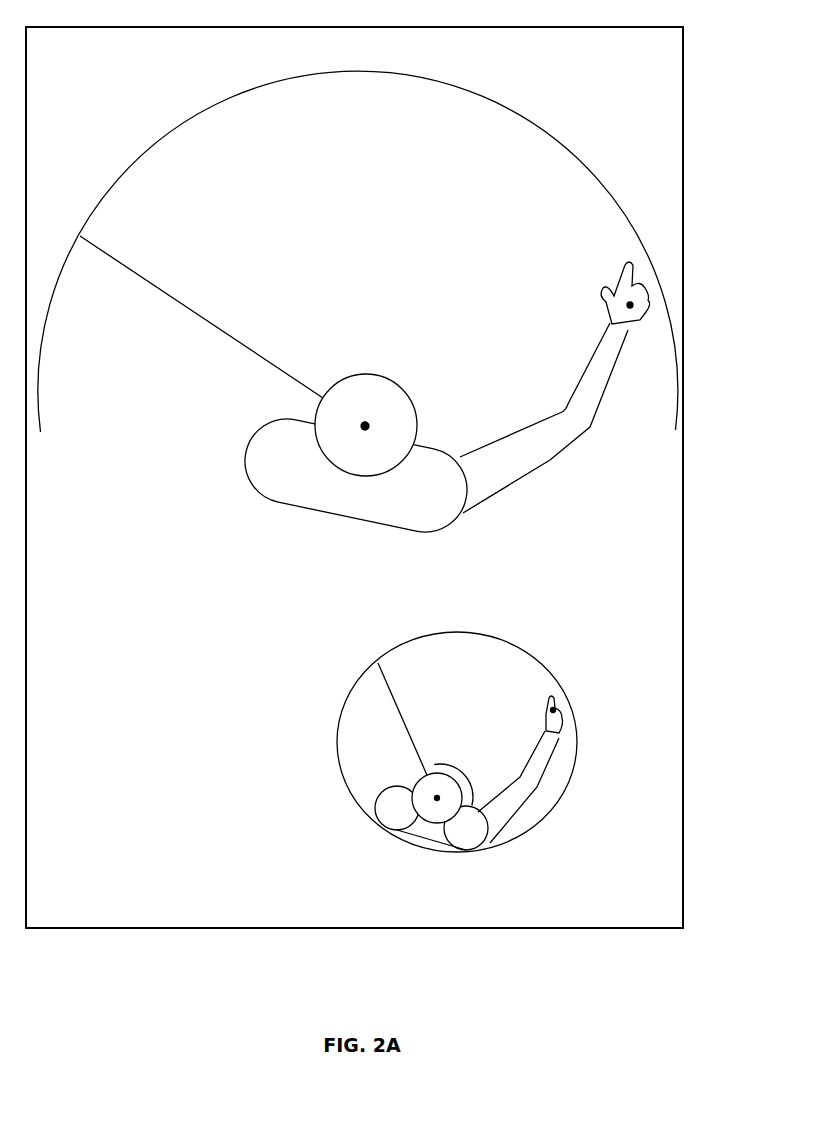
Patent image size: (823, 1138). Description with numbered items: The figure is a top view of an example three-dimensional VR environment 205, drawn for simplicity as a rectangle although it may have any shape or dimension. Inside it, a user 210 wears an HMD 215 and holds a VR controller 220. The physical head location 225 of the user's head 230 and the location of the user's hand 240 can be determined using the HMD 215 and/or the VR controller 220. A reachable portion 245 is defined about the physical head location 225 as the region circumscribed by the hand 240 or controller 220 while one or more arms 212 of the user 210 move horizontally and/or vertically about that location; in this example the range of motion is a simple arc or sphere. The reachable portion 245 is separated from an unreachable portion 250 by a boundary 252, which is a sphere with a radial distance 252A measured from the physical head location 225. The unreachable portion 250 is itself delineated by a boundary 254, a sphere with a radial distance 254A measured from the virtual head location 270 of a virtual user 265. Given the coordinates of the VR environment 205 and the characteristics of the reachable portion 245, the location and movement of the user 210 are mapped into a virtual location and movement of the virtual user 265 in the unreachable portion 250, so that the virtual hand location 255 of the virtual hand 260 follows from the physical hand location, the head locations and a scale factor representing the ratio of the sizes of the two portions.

The three-dimensional VR environment 205 is at (683, 822).
The unreachable portion 250 is at (372, 149).
The boundary 254 is at (563, 147).
The radial distance 254A is at (185, 304).
The virtual user 265 is at (358, 496).
The virtual hand 260 is at (648, 317).
The virtual hand location 255 is at (652, 294).
The virtual head location 270 is at (360, 415).
The boundary 252 is at (508, 642).
The reachable portion 245 is at (357, 753).
The radial distance 252A is at (402, 712).
The user's head 230 is at (400, 827).
The user 210 is at (468, 835).
The physical head location 225 is at (432, 827).
The arm 212 is at (515, 796).
The VR controller 220 is at (548, 695).
The user's hand 240 is at (562, 708).
The HMD 215 is at (440, 763).